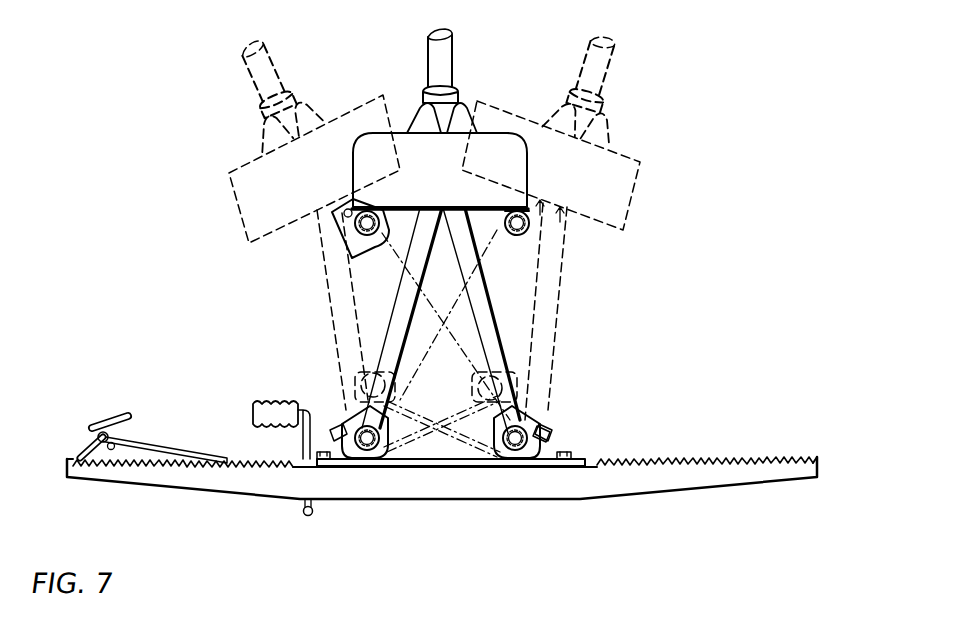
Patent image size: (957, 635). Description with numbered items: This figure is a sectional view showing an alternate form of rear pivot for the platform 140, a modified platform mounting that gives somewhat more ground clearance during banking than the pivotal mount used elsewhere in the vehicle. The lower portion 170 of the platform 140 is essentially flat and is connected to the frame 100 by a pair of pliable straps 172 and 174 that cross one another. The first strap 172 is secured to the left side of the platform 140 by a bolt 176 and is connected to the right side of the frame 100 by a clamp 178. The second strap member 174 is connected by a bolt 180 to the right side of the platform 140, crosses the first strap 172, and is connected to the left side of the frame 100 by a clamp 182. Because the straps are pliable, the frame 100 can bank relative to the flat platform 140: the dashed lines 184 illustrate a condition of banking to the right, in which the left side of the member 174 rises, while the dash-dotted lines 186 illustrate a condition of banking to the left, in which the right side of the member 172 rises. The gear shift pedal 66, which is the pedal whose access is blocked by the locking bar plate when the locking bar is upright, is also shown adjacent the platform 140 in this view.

The gear shift pedal 66 is at (253, 412).
The frame 100 is at (497, 310).
The platform 140 is at (818, 467).
The lower portion 170 is at (575, 502).
The pliable strap 172 is at (417, 460).
The pliable strap 174 is at (540, 462).
The bolt 176 is at (318, 450).
The clamp 178 is at (530, 420).
The bolt 180 is at (571, 452).
The clamp 182 is at (347, 452).
The dashed lines 184 is at (640, 192).
The dash-dotted lines 186 is at (230, 200).